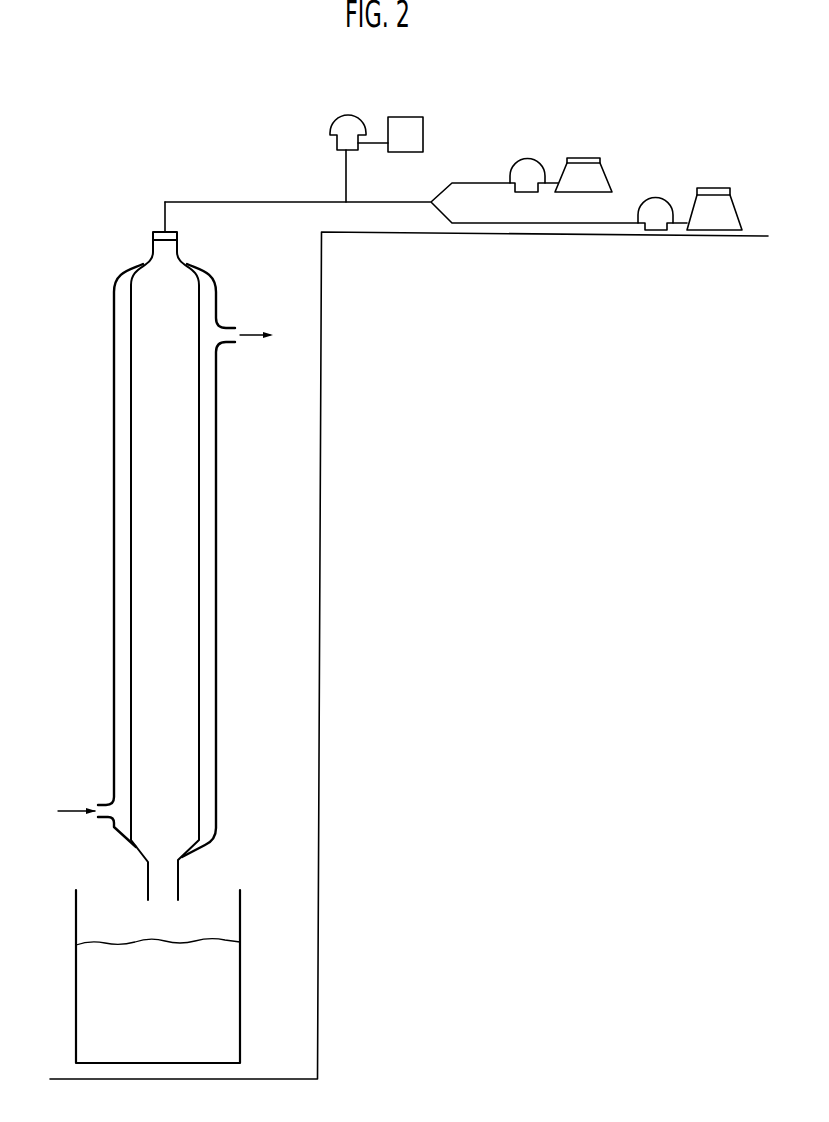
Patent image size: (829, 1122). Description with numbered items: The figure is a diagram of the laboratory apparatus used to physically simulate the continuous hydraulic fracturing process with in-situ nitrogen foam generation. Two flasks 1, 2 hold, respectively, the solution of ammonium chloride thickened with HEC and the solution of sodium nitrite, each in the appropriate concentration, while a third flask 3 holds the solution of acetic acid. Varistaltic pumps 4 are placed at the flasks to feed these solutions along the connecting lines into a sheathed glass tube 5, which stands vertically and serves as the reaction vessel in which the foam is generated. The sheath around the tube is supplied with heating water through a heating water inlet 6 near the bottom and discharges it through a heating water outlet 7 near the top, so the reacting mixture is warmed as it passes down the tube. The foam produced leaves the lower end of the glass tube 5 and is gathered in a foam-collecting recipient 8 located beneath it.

The flask 1 is at (713, 203).
The flask 2 is at (590, 170).
The flask 3 is at (415, 128).
The varistaltic pumps 4 is at (335, 127).
The sheathed glass tube 5 is at (113, 421).
The heating water inlet 6 is at (103, 803).
The heating water outlet 7 is at (228, 329).
The foam-collecting recipient 8 is at (223, 967).